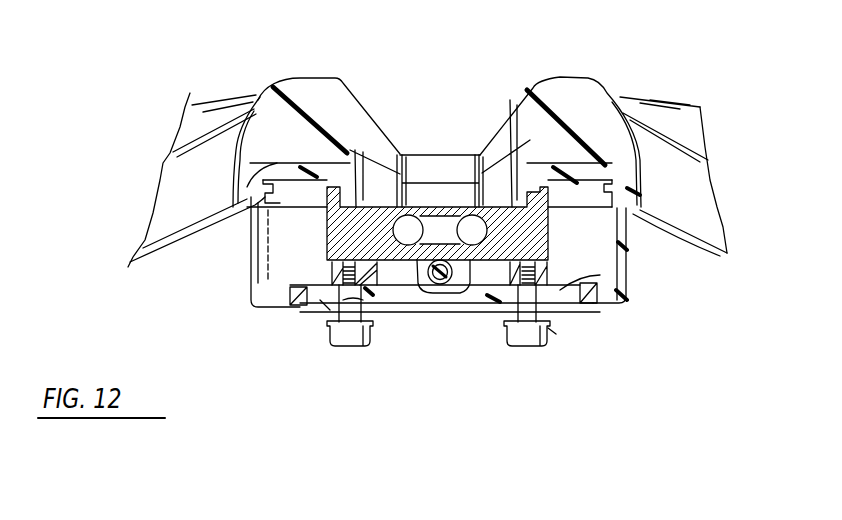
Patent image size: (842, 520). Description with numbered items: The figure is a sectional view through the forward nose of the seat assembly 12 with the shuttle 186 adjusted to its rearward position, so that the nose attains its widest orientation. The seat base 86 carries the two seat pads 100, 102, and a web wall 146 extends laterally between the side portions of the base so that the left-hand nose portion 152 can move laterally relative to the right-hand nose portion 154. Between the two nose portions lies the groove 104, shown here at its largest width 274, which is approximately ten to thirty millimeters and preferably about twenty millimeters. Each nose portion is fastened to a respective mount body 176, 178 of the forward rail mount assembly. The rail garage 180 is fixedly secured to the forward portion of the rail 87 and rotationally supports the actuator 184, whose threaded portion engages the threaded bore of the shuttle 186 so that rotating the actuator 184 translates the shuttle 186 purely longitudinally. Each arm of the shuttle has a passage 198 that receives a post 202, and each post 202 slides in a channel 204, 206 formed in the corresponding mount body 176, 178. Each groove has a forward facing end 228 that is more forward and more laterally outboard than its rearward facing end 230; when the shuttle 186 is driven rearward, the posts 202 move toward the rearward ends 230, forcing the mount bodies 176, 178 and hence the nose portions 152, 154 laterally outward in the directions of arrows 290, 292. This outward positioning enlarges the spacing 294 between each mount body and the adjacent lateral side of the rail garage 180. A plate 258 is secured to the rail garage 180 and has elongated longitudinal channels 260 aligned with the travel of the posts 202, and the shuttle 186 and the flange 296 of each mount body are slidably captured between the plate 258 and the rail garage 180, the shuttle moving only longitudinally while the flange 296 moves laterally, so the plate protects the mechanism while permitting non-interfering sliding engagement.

The seat assembly 12 is at (681, 62).
The seat base 86 is at (578, 181).
The rail 87 is at (560, 231).
The seat pad 100 is at (592, 95).
The seat pad 102 is at (297, 85).
The groove 104 is at (437, 103).
The web wall 146 is at (432, 192).
The left-hand nose portion 152 is at (565, 209).
The right-hand nose portion 154 is at (249, 194).
The mount body 176 is at (627, 257).
The mount body 178 is at (253, 247).
The rail garage 180 is at (555, 240).
The actuator 184 is at (440, 284).
The shuttle 186 is at (463, 290).
The passage 198 is at (262, 286).
The post 202 is at (347, 348).
The channel 204 is at (623, 283).
The channel 206 is at (316, 288).
The forward facing end 228 is at (318, 307).
The rearward facing end 230 is at (560, 291).
The plate 258 is at (560, 330).
The channel 260 is at (552, 331).
The largest width 274 is at (525, 47).
The arrow 290 is at (583, 62).
The arrow 292 is at (306, 61).
The spacing 294 is at (255, 213).
The flange 296 is at (627, 306).